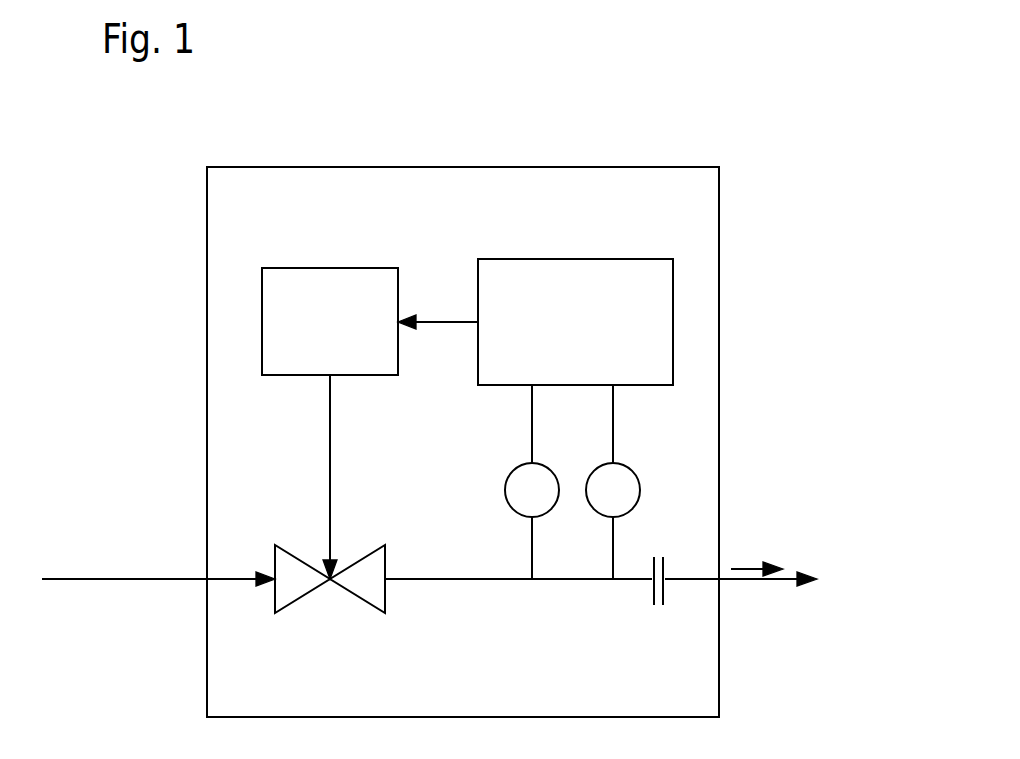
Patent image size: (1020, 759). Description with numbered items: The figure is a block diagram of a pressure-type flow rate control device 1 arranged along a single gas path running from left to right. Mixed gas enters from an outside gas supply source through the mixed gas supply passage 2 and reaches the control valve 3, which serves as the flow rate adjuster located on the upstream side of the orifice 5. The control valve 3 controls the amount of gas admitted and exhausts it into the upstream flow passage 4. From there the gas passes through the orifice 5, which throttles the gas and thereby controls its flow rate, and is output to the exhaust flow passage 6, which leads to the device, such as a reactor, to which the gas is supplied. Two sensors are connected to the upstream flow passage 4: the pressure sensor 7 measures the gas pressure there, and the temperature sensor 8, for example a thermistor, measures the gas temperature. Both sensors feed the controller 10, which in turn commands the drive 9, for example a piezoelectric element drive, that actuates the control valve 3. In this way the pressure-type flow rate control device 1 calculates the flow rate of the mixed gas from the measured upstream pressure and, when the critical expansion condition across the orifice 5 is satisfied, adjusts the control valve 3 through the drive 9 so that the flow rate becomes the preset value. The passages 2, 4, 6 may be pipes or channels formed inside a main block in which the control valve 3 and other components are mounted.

The pressure-type flow rate control device 1 is at (719, 197).
The mixed gas supply passage 2 is at (97, 580).
The control valve 3 is at (357, 598).
The upstream flow passage 4 is at (462, 580).
The orifice 5 is at (650, 597).
The exhaust flow passage 6 is at (753, 580).
The pressure sensor 7 is at (504, 492).
The temperature sensor 8 is at (641, 493).
The drive 9 is at (328, 268).
The controller 10 is at (575, 259).